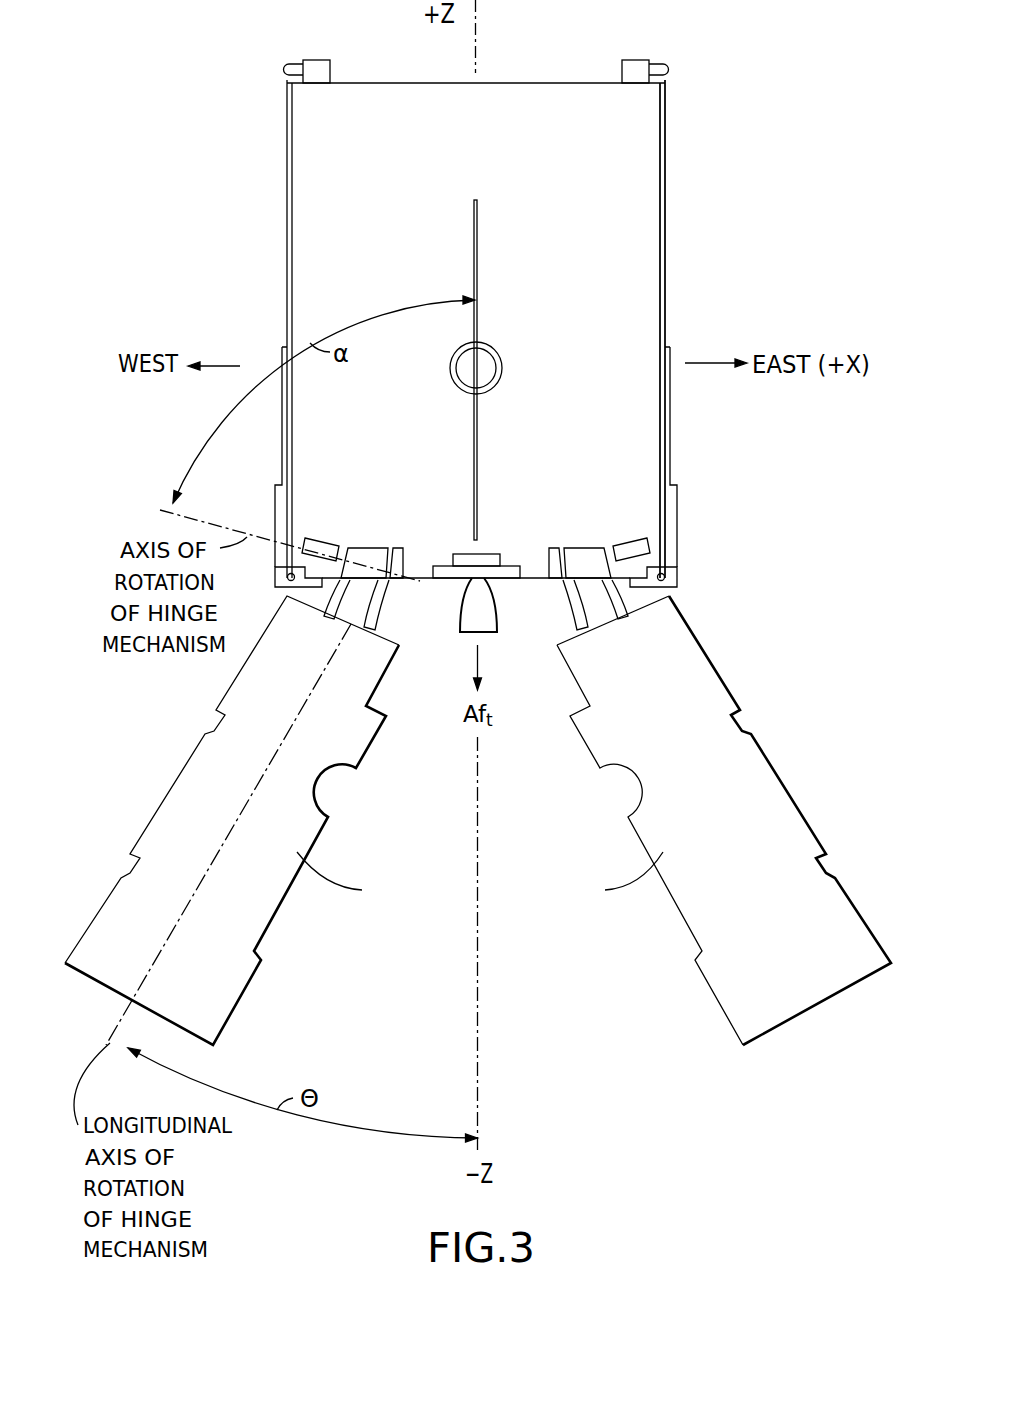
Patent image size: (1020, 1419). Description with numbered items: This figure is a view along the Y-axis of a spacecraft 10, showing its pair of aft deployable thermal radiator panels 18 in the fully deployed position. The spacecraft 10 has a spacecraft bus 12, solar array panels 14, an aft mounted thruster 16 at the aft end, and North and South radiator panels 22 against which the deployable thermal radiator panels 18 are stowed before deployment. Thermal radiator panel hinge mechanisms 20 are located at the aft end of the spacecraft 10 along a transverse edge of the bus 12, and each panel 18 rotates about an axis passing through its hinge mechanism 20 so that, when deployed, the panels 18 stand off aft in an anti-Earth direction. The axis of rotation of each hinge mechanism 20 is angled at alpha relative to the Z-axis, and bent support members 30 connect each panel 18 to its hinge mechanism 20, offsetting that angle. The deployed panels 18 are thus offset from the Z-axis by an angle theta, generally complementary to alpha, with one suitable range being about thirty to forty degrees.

The spacecraft 10 is at (740, 257).
The spacecraft bus 12 is at (667, 150).
The solar array panels 14 is at (479, 216).
The aft mounted thruster 16 is at (495, 612).
The aft deployable thermal radiator panels 18 is at (762, 742).
The thermal radiator panel hinge mechanisms 20 is at (368, 536).
The North and South radiator panels 22 is at (400, 441).
The bent support members 30 is at (340, 593).